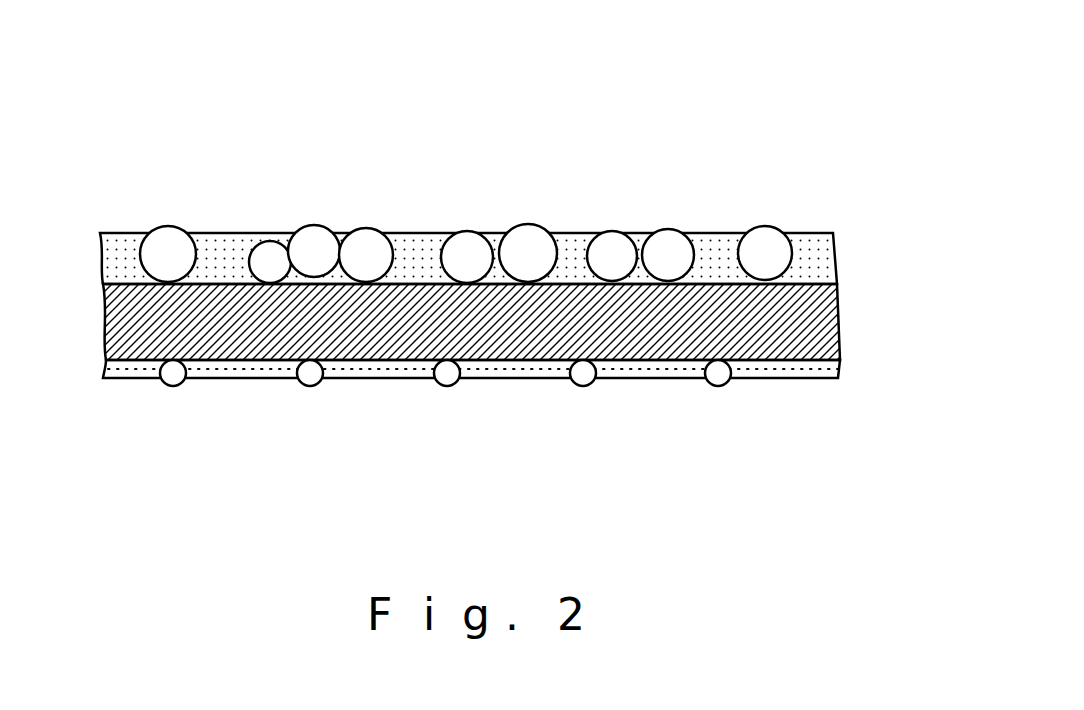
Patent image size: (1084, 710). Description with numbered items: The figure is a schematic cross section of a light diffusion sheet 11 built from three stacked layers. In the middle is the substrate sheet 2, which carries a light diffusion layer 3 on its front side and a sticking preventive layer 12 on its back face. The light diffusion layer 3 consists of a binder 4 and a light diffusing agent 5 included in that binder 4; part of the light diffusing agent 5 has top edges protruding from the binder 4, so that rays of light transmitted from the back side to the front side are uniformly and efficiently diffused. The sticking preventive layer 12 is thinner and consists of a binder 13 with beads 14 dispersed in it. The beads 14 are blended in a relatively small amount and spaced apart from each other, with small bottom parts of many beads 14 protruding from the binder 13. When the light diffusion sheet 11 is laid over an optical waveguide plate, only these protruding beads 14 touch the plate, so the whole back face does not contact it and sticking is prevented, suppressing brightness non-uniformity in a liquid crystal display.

The light diffusion sheet 11 is at (528, 88).
The substrate sheet 2 is at (838, 318).
The light diffusion layer 3 is at (832, 256).
The binder 4 is at (222, 245).
The light diffusing agent 5 is at (313, 237).
The sticking preventive layer 12 is at (840, 367).
The binder 13 is at (483, 372).
The beads 14 is at (312, 373).